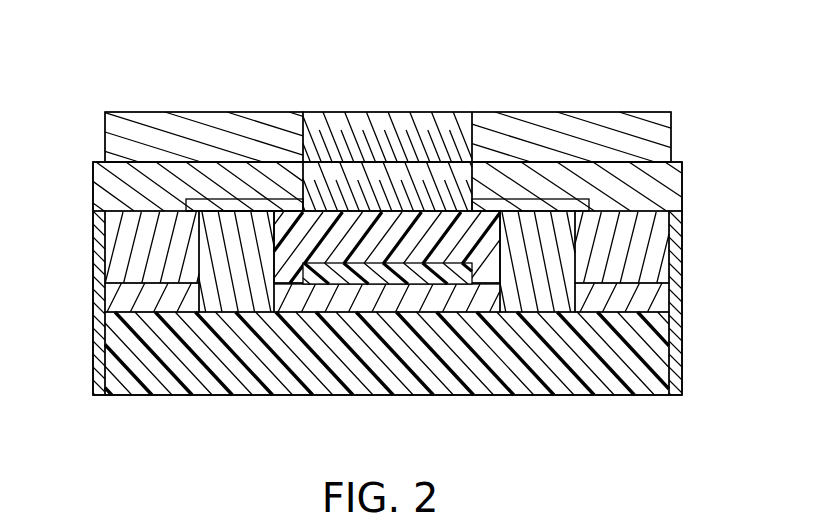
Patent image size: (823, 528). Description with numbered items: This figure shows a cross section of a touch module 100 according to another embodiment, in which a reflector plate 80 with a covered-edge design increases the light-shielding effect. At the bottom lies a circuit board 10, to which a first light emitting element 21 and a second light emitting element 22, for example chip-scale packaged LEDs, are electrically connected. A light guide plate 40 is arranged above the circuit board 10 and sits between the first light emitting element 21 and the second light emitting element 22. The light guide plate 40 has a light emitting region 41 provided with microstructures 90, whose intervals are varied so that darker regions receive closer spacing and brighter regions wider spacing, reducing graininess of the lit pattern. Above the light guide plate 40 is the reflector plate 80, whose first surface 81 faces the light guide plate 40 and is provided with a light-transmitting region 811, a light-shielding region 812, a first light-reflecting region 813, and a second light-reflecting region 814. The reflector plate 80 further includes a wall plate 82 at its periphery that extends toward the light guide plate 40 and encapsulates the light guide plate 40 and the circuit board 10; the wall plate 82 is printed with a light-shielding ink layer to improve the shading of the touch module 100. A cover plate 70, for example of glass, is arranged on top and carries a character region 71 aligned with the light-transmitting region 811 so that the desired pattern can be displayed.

The touch module 100 is at (71, 56).
The circuit board 10 is at (168, 396).
The first light emitting element 21 is at (213, 273).
The second light emitting element 22 is at (562, 257).
The light guide plate 40 is at (297, 242).
The light emitting region 41 is at (342, 284).
The cover plate 70 is at (672, 129).
The character region 71 is at (418, 122).
The reflector plate 80 is at (682, 167).
The first surface 81 is at (668, 214).
The light-transmitting region 811 is at (350, 162).
The light-shielding region 812 is at (265, 187).
The first light-reflecting region 813 is at (205, 210).
The second light-reflecting region 814 is at (515, 210).
The wall plate 82 is at (100, 347).
The microstructures 90 is at (442, 280).